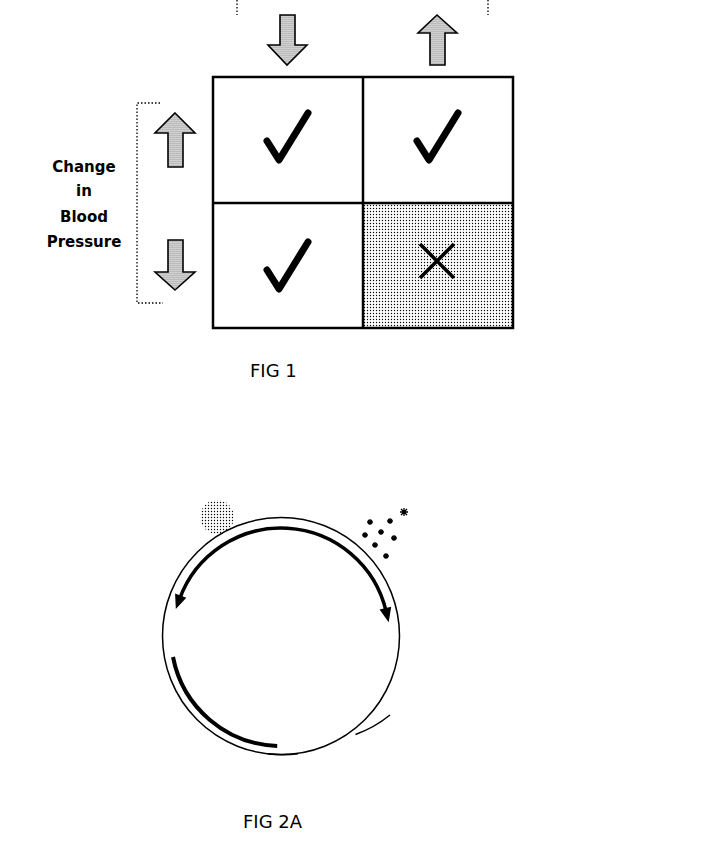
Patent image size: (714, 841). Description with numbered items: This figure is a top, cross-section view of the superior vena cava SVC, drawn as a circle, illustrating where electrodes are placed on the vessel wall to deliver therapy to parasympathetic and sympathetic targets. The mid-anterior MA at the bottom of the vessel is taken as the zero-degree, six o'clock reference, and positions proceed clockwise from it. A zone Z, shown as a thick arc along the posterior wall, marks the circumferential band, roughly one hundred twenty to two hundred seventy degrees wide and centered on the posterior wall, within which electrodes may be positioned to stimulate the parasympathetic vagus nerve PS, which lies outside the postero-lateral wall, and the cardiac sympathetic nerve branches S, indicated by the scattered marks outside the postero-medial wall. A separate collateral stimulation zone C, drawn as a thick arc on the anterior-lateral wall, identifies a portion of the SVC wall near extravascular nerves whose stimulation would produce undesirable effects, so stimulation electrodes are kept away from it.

The parasympathetic (vagus) nerve PS is at (197, 503).
The cardiac sympathetic nerve branches S is at (400, 515).
The zone Z is at (303, 532).
The collateral stimulation zone C is at (202, 722).
The superior vena cava SVC is at (376, 711).
The mid-anterior MA is at (290, 765).